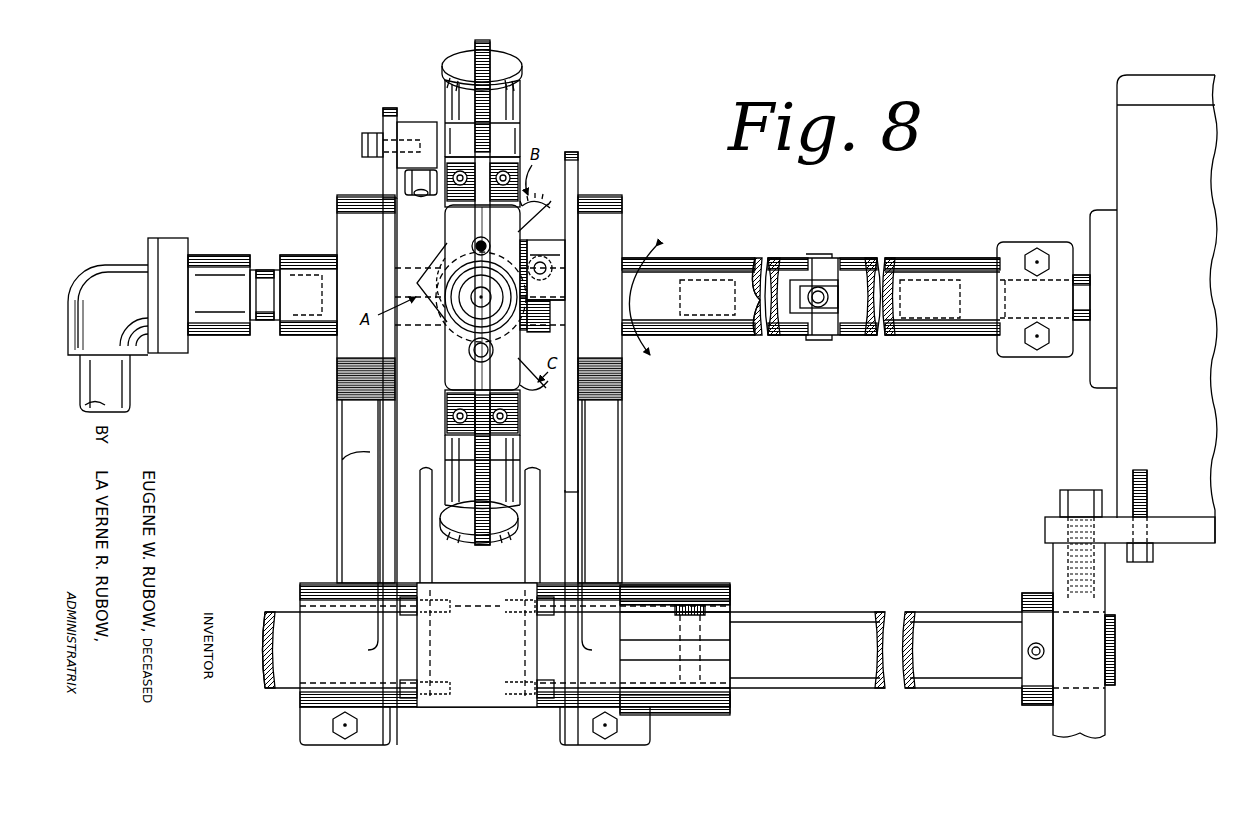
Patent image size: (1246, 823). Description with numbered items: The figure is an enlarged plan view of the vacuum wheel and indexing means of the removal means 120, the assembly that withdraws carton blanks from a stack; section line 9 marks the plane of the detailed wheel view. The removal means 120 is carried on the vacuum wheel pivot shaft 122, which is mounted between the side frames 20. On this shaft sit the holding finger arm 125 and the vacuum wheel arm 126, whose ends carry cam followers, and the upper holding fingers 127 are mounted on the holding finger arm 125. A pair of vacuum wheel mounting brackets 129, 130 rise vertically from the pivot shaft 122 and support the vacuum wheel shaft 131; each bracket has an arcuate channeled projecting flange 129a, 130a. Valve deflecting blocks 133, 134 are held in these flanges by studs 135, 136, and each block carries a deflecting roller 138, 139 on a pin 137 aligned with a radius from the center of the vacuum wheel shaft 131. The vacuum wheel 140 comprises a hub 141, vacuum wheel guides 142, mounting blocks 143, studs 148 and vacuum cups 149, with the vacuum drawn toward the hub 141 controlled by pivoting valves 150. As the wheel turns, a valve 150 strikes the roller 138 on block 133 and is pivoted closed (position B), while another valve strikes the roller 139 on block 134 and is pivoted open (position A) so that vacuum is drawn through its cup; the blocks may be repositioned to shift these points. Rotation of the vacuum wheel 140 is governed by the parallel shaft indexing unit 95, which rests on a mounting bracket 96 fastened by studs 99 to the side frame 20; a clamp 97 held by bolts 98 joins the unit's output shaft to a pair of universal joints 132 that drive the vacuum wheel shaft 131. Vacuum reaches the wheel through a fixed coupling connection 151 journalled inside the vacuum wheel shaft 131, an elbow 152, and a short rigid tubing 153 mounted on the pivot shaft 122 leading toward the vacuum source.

The section line 9- 9 is at (447, 17).
The side frame 20 is at (1110, 603).
The parallel shaft indexing unit 95 is at (1114, 144).
The mounting bracket 96 is at (1193, 543).
The clamp 97 is at (1000, 352).
The bolts 98 is at (1039, 250).
The studs 99 is at (1072, 490).
The removal means 120 is at (392, 712).
The vacuum wheel pivot shaft 122 is at (830, 613).
The holding finger arm 125 is at (470, 707).
The vacuum wheel arm 126 is at (683, 585).
The upper holding fingers 127 is at (383, 548).
The vacuum wheel mounting bracket 129 is at (337, 215).
The channeled projecting flange 129a is at (383, 112).
The vacuum wheel mounting bracket 130 is at (622, 210).
The channeled projecting flange 130a is at (578, 165).
The vacuum wheel shaft 131 is at (330, 256).
The universal joints 132 is at (832, 265).
The valve deflecting block 133 is at (425, 122).
The valve deflecting block 134 is at (550, 240).
The stud 135 is at (362, 150).
The stud 136 is at (643, 290).
The pin 137 is at (421, 198).
The deflecting roller 138 is at (405, 181).
The deflecting roller 139 is at (540, 332).
The vacuum wheel 140 is at (520, 135).
The hub 141 is at (445, 365).
The vacuum wheel guides 142 is at (491, 46).
The mounting blocks 143 is at (518, 97).
The studs 148 is at (471, 247).
The vacuum cups 149 is at (504, 68).
The valves 150 is at (416, 288).
The fixed coupling connection 151 is at (262, 270).
The elbow 152 is at (126, 265).
The rigid tubing 153 is at (130, 390).